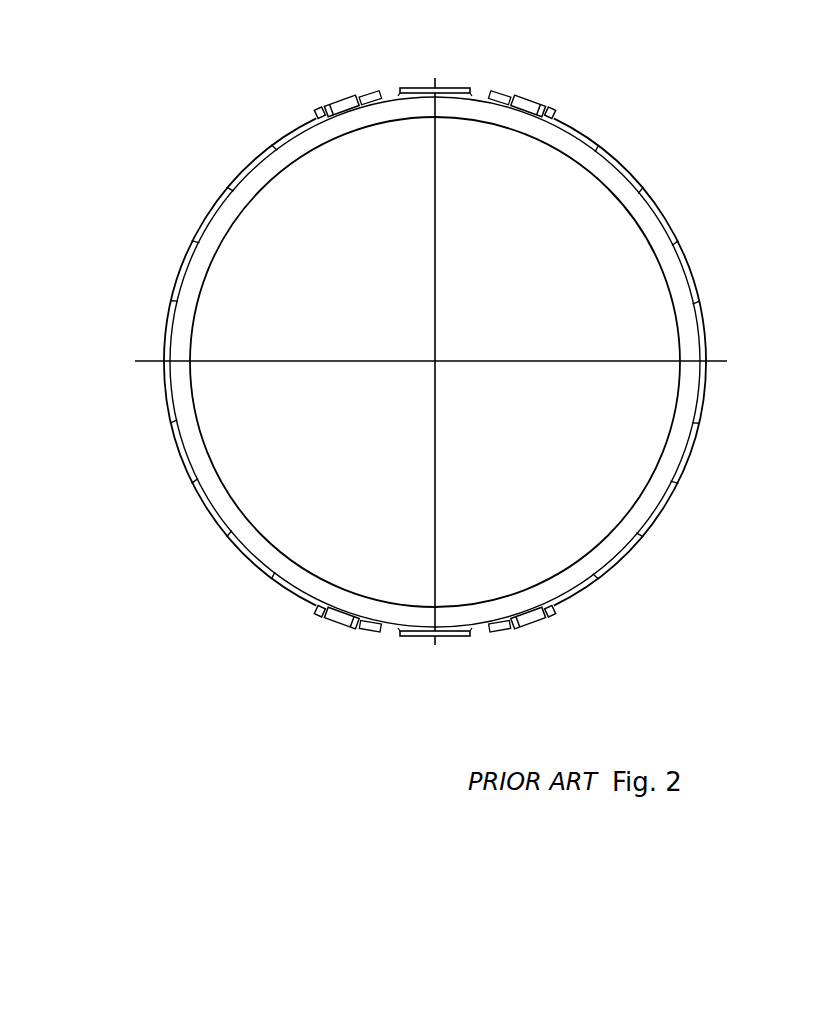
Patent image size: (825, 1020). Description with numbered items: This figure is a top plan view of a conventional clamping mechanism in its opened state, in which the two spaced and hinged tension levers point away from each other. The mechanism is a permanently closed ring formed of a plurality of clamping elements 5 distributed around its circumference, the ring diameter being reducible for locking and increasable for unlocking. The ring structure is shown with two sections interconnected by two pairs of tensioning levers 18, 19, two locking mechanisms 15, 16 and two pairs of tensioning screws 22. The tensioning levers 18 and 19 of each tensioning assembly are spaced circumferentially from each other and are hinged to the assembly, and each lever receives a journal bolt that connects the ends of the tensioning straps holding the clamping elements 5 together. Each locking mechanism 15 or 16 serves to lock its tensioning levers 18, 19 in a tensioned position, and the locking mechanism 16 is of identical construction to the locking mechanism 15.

The clamping elements 5 is at (673, 221).
The locking mechanism 15 is at (442, 635).
The locking mechanism 16 is at (448, 89).
The tensioning lever 18 is at (336, 102).
The tensioning lever 19 is at (532, 104).
The tensioning screws 22 is at (325, 108).